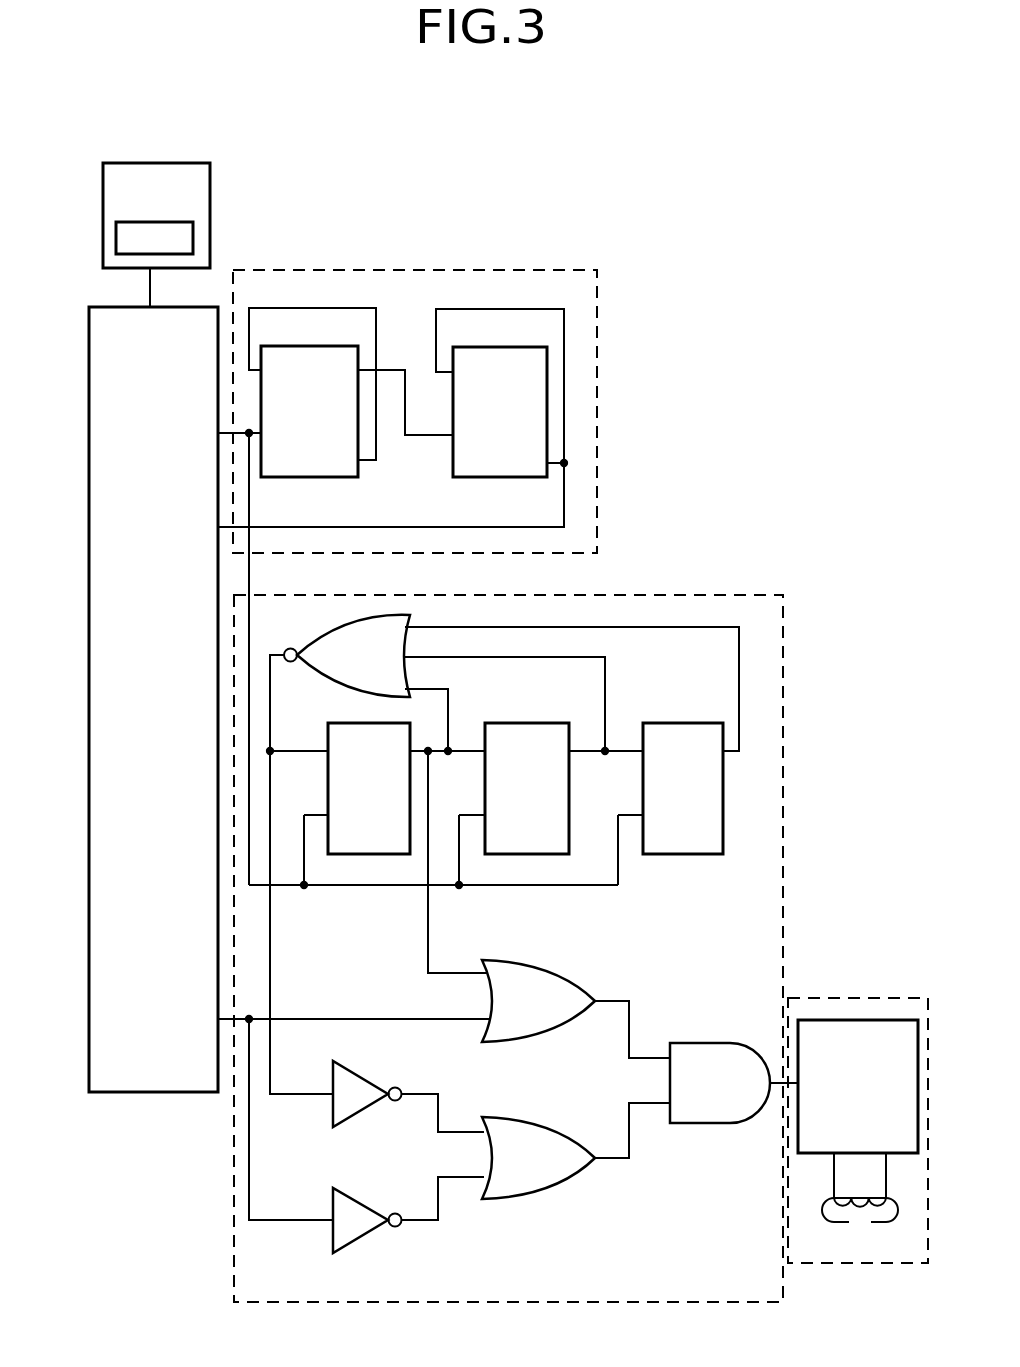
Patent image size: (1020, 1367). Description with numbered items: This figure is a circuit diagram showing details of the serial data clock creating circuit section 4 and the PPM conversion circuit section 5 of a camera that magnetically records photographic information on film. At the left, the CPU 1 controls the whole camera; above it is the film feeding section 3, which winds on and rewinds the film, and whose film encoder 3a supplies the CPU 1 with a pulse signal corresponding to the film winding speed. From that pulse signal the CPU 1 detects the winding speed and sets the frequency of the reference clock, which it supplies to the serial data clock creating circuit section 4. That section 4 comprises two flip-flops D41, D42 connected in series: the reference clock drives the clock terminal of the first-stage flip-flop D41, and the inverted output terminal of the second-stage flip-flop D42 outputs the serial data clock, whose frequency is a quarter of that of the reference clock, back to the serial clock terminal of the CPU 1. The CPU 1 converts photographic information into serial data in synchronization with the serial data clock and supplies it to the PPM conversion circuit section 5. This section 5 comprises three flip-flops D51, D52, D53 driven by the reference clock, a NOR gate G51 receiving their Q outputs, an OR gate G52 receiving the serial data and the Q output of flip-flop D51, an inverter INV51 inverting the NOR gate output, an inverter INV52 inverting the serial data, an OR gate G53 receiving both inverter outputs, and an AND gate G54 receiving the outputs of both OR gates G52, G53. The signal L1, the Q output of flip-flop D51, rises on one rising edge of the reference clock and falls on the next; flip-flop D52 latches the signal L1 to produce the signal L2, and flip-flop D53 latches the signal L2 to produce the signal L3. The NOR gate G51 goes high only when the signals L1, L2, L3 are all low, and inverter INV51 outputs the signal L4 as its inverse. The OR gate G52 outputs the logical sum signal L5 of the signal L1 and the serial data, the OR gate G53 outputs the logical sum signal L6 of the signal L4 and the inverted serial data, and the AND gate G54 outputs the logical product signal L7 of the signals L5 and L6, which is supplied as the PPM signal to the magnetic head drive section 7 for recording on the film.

The CPU 1 is at (155, 1092).
The film feeding section 3 is at (197, 197).
The film encoder 3a is at (116, 237).
The serial data clock creating circuit section 4 is at (585, 405).
The PPM conversion circuit section 5 is at (770, 852).
The magnetic head drive section 7 is at (830, 1263).
The first-stage flip-flop D41 is at (313, 477).
The second-stage flip-flop D42 is at (497, 477).
The flip-flop D51 is at (372, 854).
The flip-flop D52 is at (543, 855).
The flip-flop D53 is at (697, 855).
The NOR gate G51 is at (332, 649).
The OR gate G52 is at (560, 965).
The OR gate G53 is at (555, 1120).
The AND gate G54 is at (725, 1043).
The inverter INV51 is at (388, 1046).
The inverter INV52 is at (388, 1173).
The signal L1 is at (448, 705).
The signal L2 is at (605, 690).
The signal L3 is at (740, 660).
The signal L4 is at (440, 1091).
The logical sum signal L5 is at (633, 1005).
The logical sum signal L6 is at (636, 1160).
The logical product signal L7 is at (776, 1092).